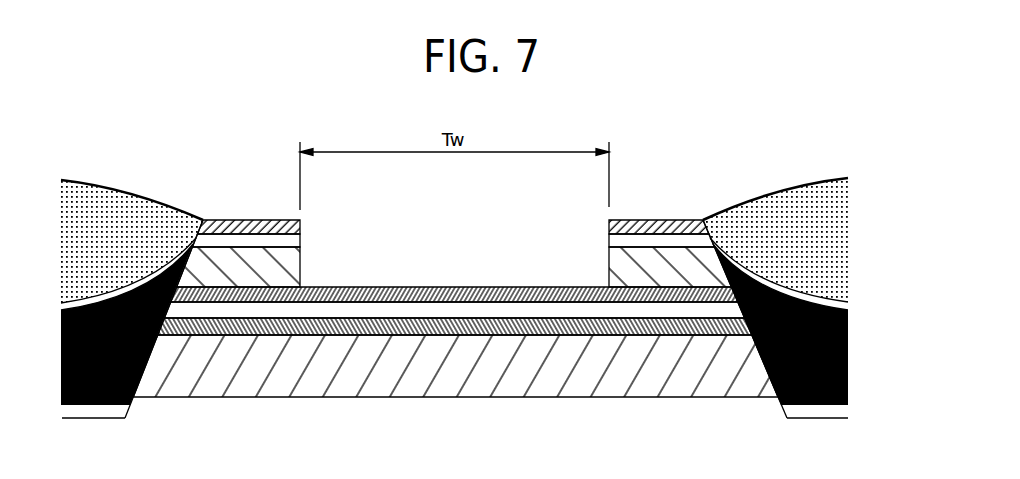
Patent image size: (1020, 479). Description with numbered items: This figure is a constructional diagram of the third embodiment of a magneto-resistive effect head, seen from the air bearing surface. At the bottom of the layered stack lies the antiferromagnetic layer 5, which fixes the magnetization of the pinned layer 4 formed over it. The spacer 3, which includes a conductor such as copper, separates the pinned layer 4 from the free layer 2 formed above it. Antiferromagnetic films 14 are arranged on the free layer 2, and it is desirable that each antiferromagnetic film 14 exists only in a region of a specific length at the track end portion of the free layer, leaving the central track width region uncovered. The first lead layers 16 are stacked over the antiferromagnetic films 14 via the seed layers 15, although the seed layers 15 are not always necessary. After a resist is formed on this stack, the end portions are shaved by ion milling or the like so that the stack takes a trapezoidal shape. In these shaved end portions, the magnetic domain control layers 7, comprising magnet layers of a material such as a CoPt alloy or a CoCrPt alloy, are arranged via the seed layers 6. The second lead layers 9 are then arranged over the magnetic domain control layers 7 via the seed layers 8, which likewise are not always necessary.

The free layer 2 is at (357, 294).
The spacer 3 is at (397, 301).
The pinned layer 4 is at (426, 329).
The antiferromagnetic layer 5 is at (363, 383).
The seed layer 6 is at (842, 418).
The magnetic domain control layer 7 is at (848, 357).
The seed layer 8 is at (842, 304).
The second lead layer 9 is at (842, 207).
The antiferromagnetic film 14 is at (620, 272).
The seed layer 15 is at (610, 240).
The first lead layer 16 is at (610, 221).